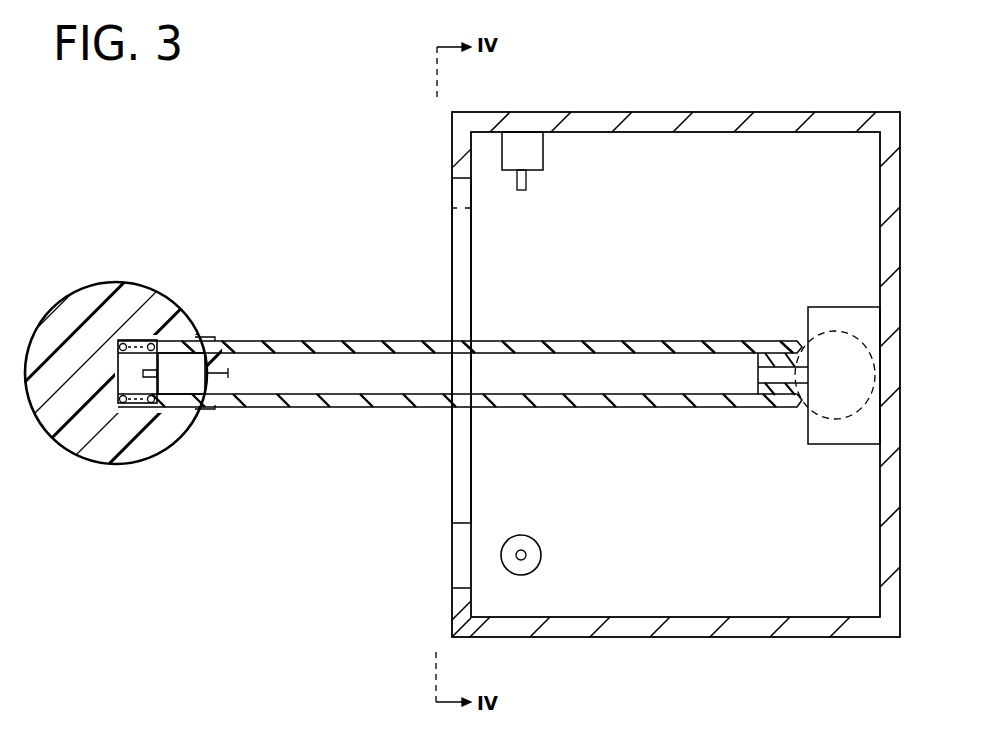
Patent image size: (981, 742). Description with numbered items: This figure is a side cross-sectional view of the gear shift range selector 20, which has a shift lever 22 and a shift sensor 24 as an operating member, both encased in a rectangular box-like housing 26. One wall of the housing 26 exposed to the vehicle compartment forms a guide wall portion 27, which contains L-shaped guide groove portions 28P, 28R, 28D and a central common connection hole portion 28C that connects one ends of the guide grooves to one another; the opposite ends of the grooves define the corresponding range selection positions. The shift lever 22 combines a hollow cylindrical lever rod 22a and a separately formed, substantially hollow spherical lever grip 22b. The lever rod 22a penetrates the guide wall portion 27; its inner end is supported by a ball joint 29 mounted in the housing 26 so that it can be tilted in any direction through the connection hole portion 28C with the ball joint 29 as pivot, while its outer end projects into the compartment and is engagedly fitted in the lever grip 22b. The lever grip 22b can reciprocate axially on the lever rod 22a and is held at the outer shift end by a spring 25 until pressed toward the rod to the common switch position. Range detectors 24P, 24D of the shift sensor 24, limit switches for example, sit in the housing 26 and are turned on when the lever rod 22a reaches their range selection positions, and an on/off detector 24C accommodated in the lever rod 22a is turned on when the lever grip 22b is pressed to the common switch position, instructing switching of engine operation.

The range selector 20 is at (75, 218).
The shift lever 22 is at (283, 238).
The lever rod 22a is at (245, 348).
The lever grip 22b is at (165, 313).
The shift sensor 24 is at (544, 572).
The on/off detector 24C is at (205, 386).
The range detector 24D is at (521, 578).
The range detector 24P is at (520, 136).
The spring 25 is at (146, 406).
The housing 26 is at (640, 112).
The guide wall portion 27 is at (452, 153).
The guide groove portion 28R is at (470, 180).
The guide groove portion 28P is at (465, 208).
The connection hole portion 28C is at (452, 376).
The guide groove portion 28D is at (462, 588).
The ball joint 29 is at (808, 332).